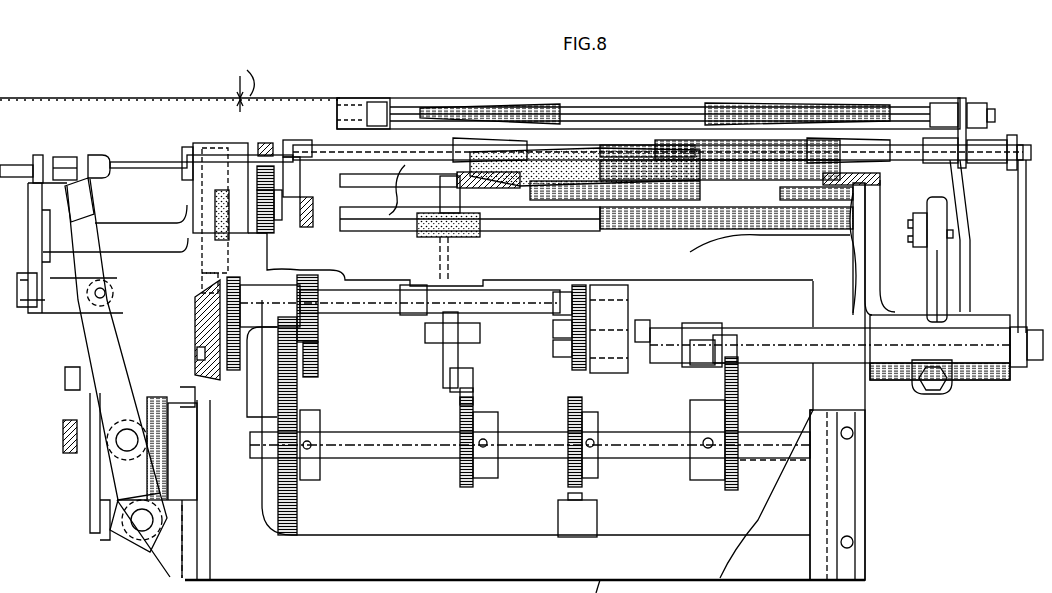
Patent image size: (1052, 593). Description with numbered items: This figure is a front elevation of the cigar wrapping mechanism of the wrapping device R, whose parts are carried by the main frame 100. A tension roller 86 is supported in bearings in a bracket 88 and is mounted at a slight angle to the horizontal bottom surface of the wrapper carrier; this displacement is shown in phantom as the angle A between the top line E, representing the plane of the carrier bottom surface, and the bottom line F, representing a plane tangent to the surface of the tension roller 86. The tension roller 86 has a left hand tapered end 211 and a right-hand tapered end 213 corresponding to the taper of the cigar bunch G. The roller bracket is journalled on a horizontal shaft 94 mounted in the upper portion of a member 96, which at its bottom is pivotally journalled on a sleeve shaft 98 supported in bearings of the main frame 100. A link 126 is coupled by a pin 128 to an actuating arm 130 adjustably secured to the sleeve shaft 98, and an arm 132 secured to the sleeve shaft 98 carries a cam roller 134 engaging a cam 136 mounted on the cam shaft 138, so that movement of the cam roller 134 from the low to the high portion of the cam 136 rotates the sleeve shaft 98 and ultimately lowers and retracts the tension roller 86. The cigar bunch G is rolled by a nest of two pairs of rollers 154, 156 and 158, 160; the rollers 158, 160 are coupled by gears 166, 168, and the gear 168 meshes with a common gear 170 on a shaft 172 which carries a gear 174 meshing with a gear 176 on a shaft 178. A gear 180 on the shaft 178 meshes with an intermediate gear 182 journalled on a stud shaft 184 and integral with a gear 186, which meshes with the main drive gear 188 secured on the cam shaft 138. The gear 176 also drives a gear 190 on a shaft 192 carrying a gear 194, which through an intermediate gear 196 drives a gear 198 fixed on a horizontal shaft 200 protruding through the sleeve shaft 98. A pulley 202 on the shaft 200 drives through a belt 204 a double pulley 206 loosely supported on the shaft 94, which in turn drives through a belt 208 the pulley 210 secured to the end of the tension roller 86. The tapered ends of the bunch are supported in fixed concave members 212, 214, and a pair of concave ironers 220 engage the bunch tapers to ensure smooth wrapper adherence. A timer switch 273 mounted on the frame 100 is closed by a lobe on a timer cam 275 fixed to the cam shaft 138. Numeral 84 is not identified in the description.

The top line E is at (192, 100).
The bottom line F is at (182, 102).
The angle A is at (242, 85).
The shaft 84 is at (324, 156).
The tension roller 86 is at (726, 112).
The bracket 88 is at (415, 99).
The horizontal shaft 94 is at (1032, 150).
The member 96 is at (712, 238).
The sleeve shaft 98 is at (760, 350).
The main frame 100 is at (867, 504).
The link 126 is at (925, 228).
The pin 128 is at (953, 235).
The actuating arm 130 is at (937, 252).
The arm 132 is at (700, 336).
The cam roller 134 is at (727, 350).
The cam 136 is at (728, 400).
The cam shaft 138 is at (366, 452).
The roller 154 is at (652, 150).
The roller 156 is at (628, 192).
The roller 158 is at (758, 140).
The roller 160 is at (552, 200).
The gear 166 is at (266, 144).
The gear 168 is at (258, 178).
The common gear 170 is at (277, 236).
The shaft 172 is at (372, 242).
The gear 174 is at (212, 203).
The gear 176 is at (222, 266).
The shaft 178 is at (374, 316).
The gear 180 is at (342, 284).
The intermediate gear 182 is at (318, 368).
The stud shaft 184 is at (245, 343).
The gear 186 is at (284, 320).
The main drive gear 188 is at (297, 505).
The gear 190 is at (226, 320).
The shaft 192 is at (408, 316).
The gear 194 is at (572, 292).
The intermediate gear 196 is at (592, 320).
The gear 198 is at (578, 352).
The horizontal shaft 200 is at (556, 342).
The pulley 202 is at (1013, 378).
The belt 204 is at (1020, 260).
The double pulley 206 is at (985, 162).
The belt 208 is at (964, 100).
The pulley 210 is at (984, 110).
The left hand tapered end 211 is at (457, 108).
The fixed concave member 212 is at (846, 186).
The right-hand tapered end 213 is at (823, 108).
The fixed concave member 214 is at (492, 190).
The concave ironers 220 is at (473, 140).
The timer switch 273 is at (597, 520).
The timer cam 275 is at (600, 482).
The cigar G is at (522, 163).
The wrapping device R is at (880, 446).